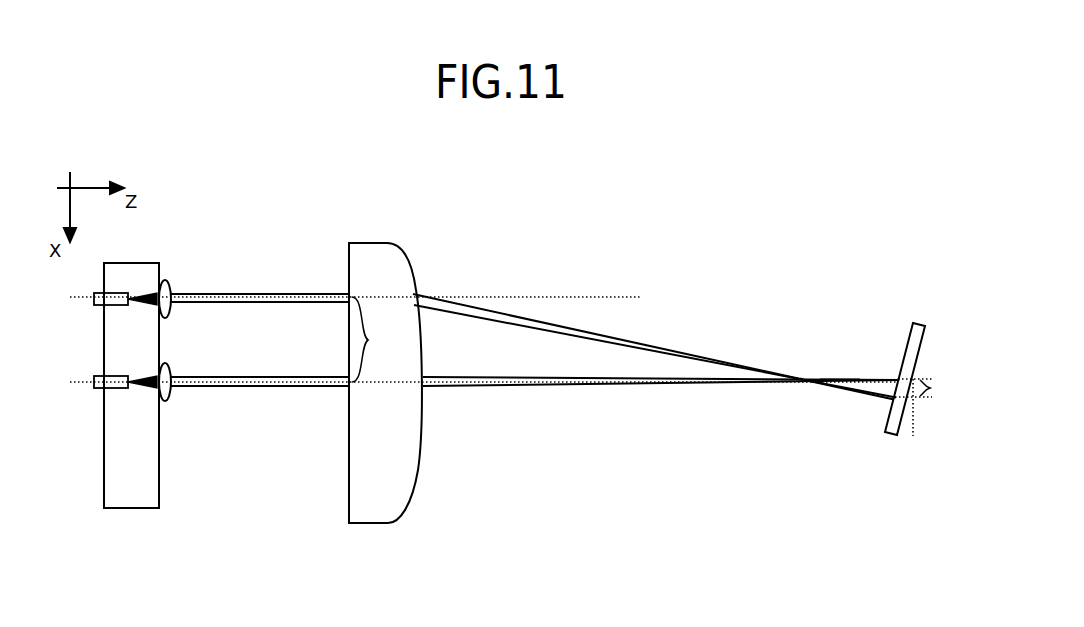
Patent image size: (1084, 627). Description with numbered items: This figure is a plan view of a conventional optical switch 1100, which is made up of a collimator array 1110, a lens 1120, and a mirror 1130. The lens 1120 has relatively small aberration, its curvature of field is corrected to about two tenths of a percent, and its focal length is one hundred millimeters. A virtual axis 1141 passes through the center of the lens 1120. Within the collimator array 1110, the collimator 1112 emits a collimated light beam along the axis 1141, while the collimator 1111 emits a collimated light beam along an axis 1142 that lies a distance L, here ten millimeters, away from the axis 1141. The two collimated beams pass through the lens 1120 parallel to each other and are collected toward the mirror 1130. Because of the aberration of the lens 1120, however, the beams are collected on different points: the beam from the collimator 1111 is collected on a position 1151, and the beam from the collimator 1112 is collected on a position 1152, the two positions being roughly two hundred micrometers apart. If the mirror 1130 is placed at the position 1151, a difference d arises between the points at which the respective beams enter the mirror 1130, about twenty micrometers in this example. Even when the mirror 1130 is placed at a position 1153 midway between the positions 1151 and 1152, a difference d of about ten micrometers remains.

The optical switch 1100 is at (668, 177).
The collimator array 1110 is at (142, 263).
The collimator 1111 is at (93, 307).
The collimator 1112 is at (93, 390).
The lens 1120 is at (372, 242).
The mirror 1130 is at (912, 324).
The axis 1141 is at (943, 377).
The axis 1142 is at (606, 295).
The position 1151 is at (802, 377).
The position 1152 is at (897, 378).
The position 1153 is at (842, 376).